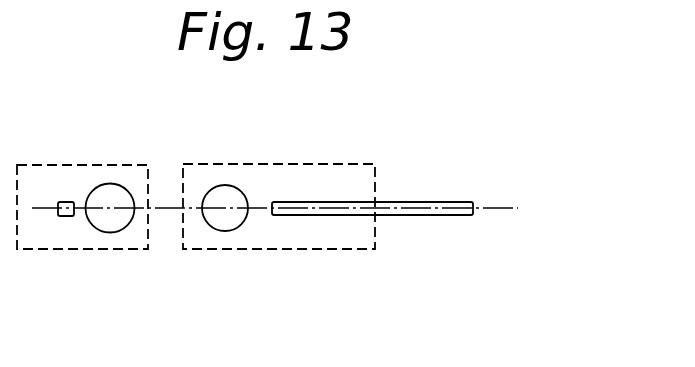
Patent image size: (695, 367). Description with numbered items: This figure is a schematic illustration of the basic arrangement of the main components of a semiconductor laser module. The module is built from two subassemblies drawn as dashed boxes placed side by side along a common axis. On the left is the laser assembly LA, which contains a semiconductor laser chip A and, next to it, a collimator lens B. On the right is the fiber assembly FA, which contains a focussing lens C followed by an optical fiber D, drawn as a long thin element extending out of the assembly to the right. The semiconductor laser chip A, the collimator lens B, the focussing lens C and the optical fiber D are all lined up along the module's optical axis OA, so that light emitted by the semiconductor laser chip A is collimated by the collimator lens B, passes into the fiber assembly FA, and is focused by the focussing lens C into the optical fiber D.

The laser assembly LA is at (97, 163).
The fiber assembly FA is at (328, 162).
The semiconductor laser chip A is at (62, 218).
The collimator lens B is at (123, 231).
The focussing lens C is at (223, 233).
The optical fiber D is at (333, 217).
The optical axis OA is at (503, 210).